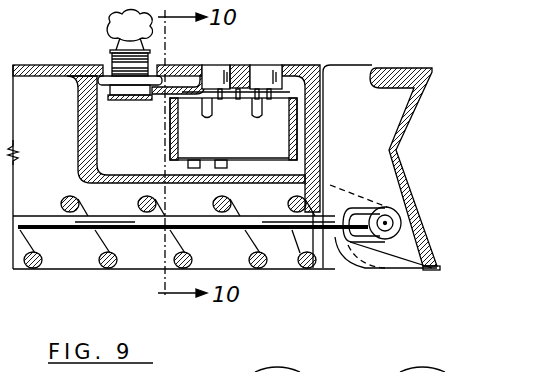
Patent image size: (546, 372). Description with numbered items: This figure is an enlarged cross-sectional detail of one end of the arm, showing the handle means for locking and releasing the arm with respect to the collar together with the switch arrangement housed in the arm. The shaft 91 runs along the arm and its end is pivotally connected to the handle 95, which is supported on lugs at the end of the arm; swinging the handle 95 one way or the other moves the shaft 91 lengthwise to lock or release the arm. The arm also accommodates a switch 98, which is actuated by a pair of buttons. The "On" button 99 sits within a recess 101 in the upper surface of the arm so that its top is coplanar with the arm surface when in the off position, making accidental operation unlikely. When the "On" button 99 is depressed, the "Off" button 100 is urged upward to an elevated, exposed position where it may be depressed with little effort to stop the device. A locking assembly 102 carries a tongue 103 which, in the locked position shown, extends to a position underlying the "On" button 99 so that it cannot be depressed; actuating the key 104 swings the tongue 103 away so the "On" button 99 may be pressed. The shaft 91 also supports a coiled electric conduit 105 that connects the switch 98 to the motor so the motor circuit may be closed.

The shaft 91 is at (47, 216).
The handle 95 is at (405, 162).
The switch 98 is at (265, 143).
The "On" button 99 is at (220, 70).
The "Off" button 100 is at (268, 70).
The recess 101 is at (236, 68).
The locking assembly 102 is at (112, 55).
The tongue 103 is at (148, 100).
The key 104 is at (112, 22).
The coiled electric conduit 105 is at (293, 256).